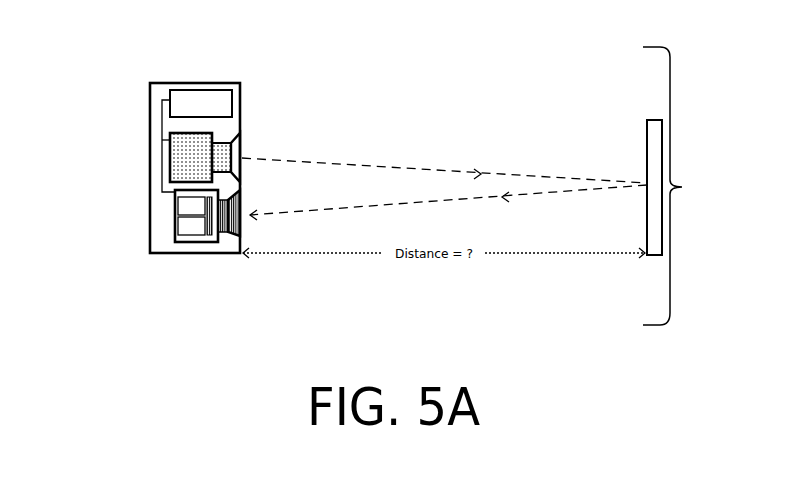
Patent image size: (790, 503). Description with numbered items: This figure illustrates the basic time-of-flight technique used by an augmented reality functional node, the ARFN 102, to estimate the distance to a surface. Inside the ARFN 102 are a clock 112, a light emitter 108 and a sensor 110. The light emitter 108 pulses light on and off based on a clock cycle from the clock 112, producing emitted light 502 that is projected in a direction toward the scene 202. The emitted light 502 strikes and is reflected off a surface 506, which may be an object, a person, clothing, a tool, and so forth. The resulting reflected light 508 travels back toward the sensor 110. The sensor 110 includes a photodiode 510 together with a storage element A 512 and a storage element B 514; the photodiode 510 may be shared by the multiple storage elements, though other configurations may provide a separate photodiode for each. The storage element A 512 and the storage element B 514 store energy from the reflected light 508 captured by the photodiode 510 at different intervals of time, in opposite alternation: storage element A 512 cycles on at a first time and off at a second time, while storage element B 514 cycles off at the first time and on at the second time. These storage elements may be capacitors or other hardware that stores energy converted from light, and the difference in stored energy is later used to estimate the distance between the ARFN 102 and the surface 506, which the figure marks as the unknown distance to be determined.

The ARFN 102 is at (183, 253).
The clock 112 is at (202, 90).
The light emitter 108 is at (219, 143).
The sensor 110 is at (135, 244).
The storage element A 512 is at (182, 200).
The storage element B 514 is at (133, 247).
The photodiode 510 is at (212, 240).
The emitted light 502 is at (328, 160).
The reflected light 508 is at (445, 198).
The surface 506 is at (648, 120).
The scene 202 is at (685, 186).